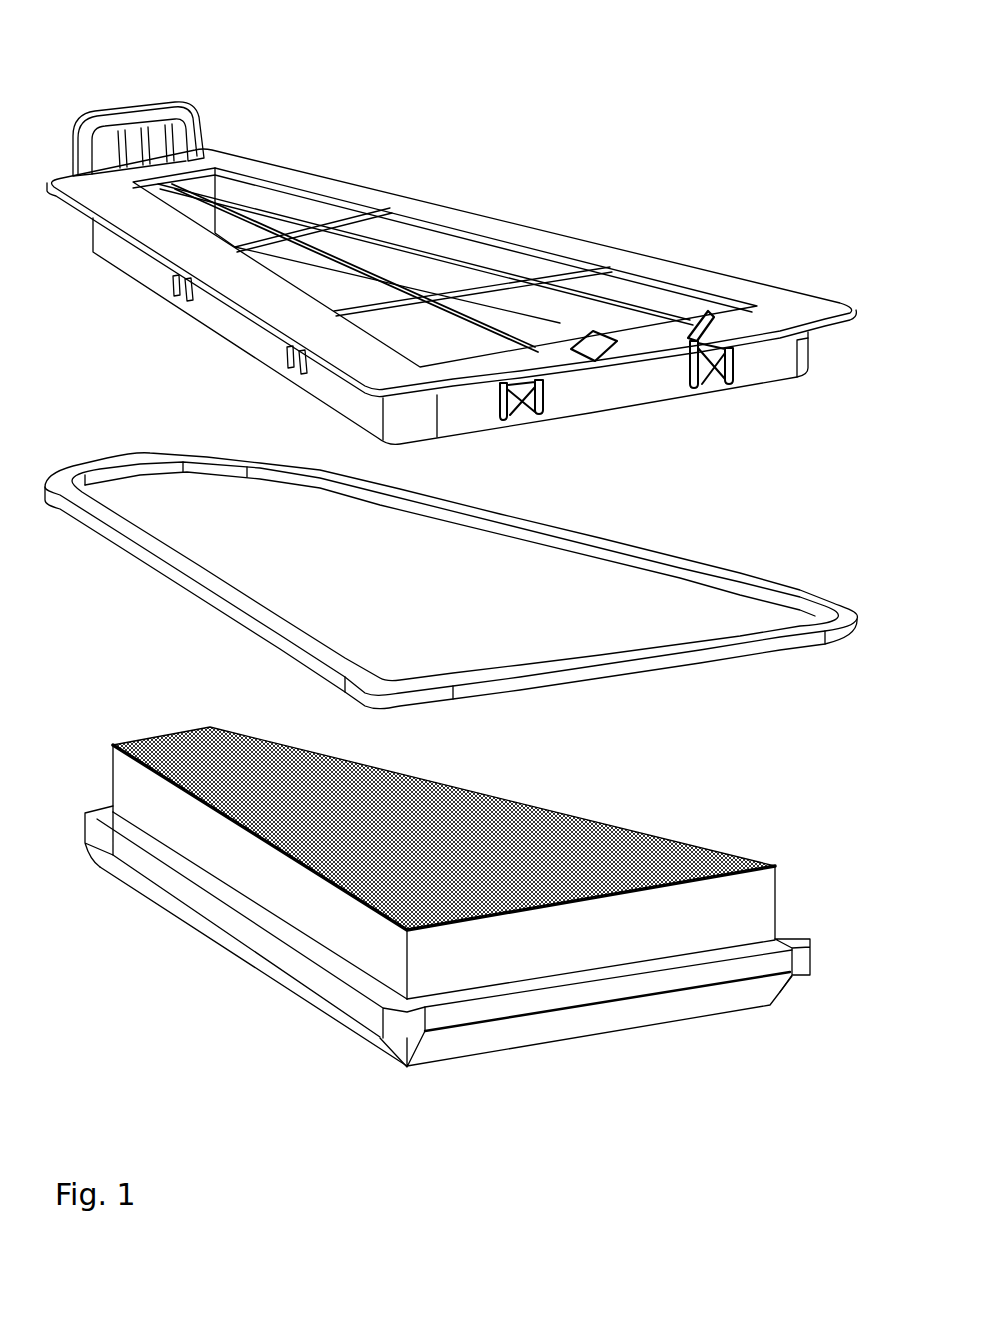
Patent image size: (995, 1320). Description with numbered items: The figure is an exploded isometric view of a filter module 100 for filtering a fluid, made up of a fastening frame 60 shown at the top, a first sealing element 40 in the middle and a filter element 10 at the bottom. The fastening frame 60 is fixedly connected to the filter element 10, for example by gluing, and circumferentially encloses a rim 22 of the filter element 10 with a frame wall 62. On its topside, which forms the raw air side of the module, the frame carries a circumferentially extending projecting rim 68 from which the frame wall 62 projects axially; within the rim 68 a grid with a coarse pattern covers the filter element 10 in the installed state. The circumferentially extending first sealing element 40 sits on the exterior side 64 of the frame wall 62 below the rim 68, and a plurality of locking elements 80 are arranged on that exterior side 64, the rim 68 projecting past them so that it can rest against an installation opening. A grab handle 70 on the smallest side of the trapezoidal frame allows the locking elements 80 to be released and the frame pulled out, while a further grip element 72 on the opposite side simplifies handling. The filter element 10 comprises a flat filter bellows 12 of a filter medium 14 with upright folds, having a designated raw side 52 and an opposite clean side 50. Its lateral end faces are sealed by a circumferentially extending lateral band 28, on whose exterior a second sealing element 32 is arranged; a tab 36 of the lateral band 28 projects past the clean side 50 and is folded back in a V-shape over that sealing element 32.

The filter module 100 is at (778, 169).
The fastening frame 60 is at (478, 211).
The grab handle 70 is at (139, 108).
The grip element 72 is at (683, 313).
The rim 68 is at (262, 324).
The frame wall 62 is at (450, 350).
The exterior side 64 is at (620, 392).
The locking elements 80 is at (722, 383).
The first sealing element 40 is at (146, 463).
The filter element 10 is at (737, 858).
The filter bellows 12 is at (444, 806).
The filter medium 14 is at (625, 855).
The rim 22 is at (203, 835).
The lateral band 28 is at (745, 913).
The second sealing element 32 is at (105, 822).
The tab 36 is at (238, 941).
The clean side 50 is at (323, 1042).
The raw side 52 is at (549, 809).